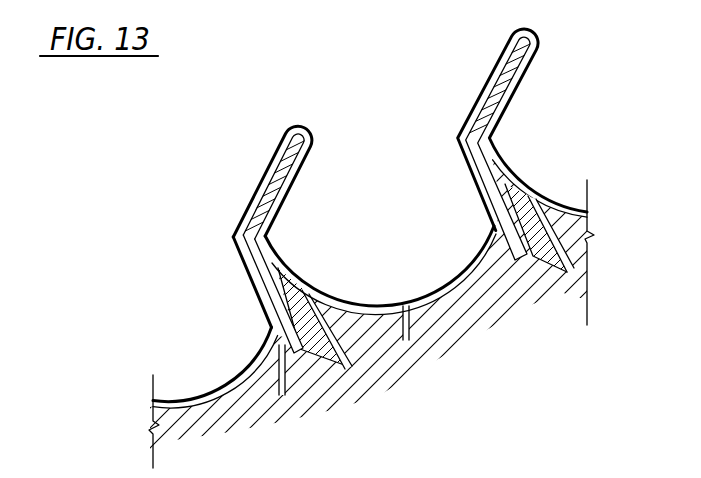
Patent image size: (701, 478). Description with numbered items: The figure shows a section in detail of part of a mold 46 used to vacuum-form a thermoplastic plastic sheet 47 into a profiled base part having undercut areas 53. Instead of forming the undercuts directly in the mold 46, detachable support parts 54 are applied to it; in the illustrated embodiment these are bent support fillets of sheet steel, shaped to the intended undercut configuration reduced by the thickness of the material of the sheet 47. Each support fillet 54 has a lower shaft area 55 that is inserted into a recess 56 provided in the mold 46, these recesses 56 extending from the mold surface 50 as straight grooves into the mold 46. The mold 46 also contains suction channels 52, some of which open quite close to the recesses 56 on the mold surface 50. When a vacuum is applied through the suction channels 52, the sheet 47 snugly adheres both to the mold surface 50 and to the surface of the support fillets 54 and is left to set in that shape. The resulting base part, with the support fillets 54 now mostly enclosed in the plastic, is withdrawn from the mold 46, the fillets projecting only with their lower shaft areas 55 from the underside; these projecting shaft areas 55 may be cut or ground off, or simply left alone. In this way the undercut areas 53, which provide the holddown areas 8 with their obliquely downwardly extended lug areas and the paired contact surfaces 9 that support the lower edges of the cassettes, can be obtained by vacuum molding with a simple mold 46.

The holddown area 8 is at (303, 168).
The contact surface 9 is at (303, 135).
The mold 46 is at (583, 222).
The plastic sheet 47 is at (272, 163).
The mold surface 50 is at (387, 308).
The suction channel 52 is at (305, 292).
The undercut area 53 is at (300, 199).
The support part 54 is at (250, 218).
The lower shaft area 55 is at (277, 322).
The recess 56 is at (310, 353).